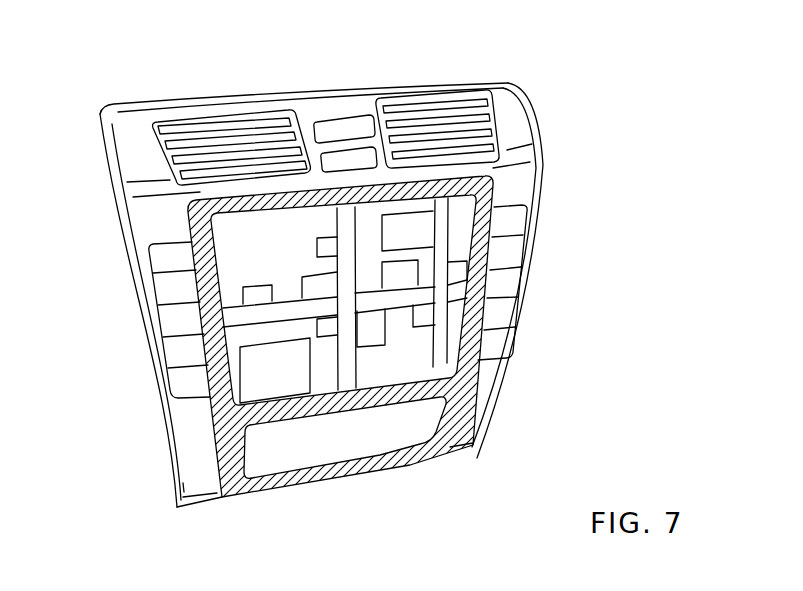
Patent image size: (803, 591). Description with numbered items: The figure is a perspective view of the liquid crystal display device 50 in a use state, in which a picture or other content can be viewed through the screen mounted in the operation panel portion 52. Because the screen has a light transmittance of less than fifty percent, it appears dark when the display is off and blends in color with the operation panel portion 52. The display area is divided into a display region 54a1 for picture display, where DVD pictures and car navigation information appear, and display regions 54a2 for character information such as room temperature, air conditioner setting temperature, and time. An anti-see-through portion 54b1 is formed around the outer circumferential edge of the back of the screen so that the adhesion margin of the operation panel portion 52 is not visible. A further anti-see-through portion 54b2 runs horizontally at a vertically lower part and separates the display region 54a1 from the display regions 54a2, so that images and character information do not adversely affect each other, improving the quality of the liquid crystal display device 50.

The liquid crystal display device 50 is at (553, 146).
The operation panel portion 52 is at (509, 105).
The display region for picture display 54a1 is at (222, 255).
The display regions for character information display 54a2 is at (250, 448).
The anti-see-through portion 54b1 is at (483, 257).
The anti-see-through portion in horizontal direction 54b2 is at (432, 388).